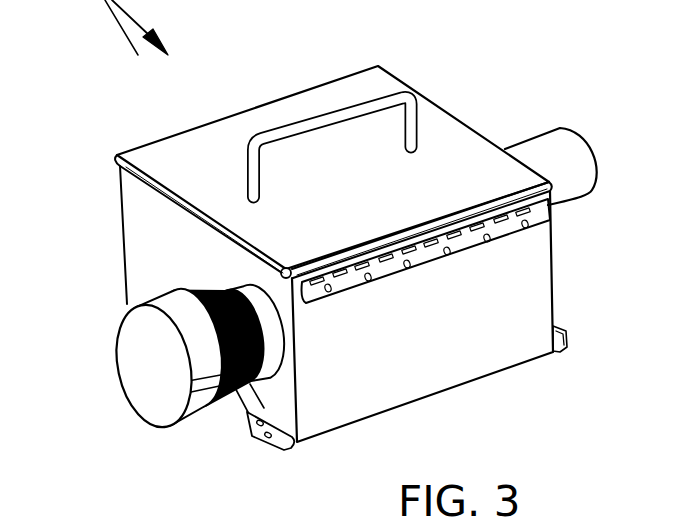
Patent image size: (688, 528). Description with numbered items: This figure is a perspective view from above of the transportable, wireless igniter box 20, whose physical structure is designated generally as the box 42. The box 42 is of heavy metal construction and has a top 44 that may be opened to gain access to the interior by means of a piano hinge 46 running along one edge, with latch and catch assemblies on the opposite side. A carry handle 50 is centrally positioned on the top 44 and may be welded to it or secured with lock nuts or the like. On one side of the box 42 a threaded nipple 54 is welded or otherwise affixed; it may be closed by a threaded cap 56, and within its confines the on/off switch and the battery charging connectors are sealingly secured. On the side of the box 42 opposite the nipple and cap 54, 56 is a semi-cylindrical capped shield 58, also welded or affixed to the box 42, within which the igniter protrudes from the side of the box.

The transportable, wireless igniter box 20 is at (138, 55).
The box 42 is at (535, 299).
The top 44 is at (422, 97).
The piano hinge 46 is at (535, 226).
The carry handle 50 is at (340, 117).
The threaded nipple 54 is at (243, 432).
The threaded cap 56 is at (120, 378).
The semi-cylindrical capped shield 58 is at (573, 168).